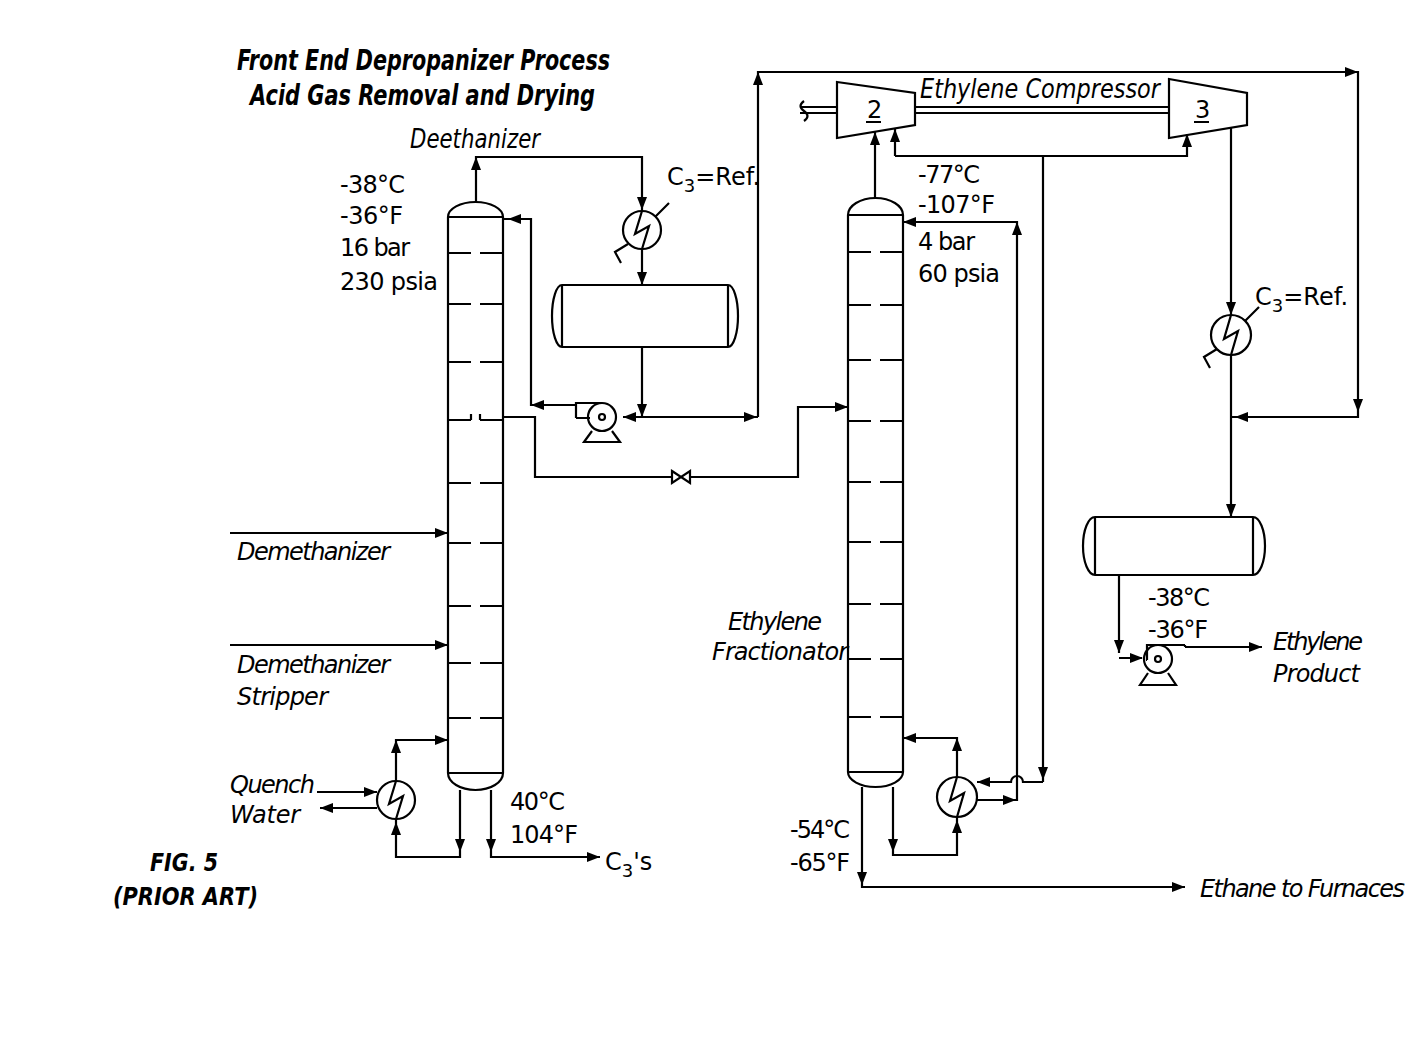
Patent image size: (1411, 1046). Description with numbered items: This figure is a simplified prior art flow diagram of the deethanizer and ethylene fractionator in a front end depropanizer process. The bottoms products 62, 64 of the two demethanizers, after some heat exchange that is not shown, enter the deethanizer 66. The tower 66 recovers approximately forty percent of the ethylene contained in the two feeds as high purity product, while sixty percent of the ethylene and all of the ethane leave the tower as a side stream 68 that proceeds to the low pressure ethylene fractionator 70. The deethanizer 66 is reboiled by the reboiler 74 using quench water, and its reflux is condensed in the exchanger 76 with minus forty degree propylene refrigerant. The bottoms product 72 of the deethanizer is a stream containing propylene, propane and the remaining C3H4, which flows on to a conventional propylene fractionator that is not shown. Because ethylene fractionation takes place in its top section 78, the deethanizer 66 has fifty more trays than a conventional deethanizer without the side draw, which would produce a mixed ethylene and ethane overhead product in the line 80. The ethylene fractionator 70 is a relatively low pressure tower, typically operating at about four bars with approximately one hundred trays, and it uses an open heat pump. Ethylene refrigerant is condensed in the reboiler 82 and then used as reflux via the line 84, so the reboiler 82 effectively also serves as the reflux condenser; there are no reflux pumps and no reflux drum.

The bottoms product 62 is at (280, 644).
The bottoms product 64 is at (278, 532).
The deethanizer 66 is at (504, 577).
The side stream 68 is at (590, 478).
The ethylene fractionator 70 is at (848, 580).
The bottoms product 72 is at (545, 858).
The reboiler 74 is at (396, 837).
The exchanger 76 is at (623, 223).
The top section 78 is at (447, 350).
The line 80 is at (642, 157).
The reboiler 82 is at (970, 815).
The line 84 is at (1017, 463).